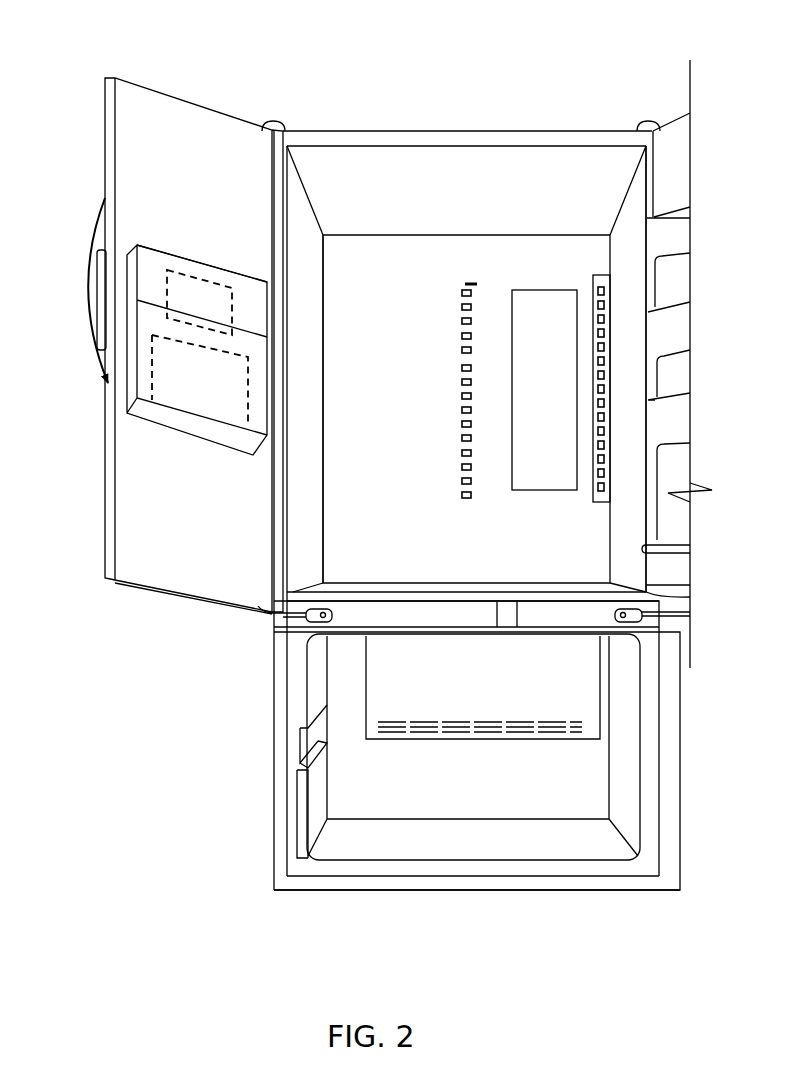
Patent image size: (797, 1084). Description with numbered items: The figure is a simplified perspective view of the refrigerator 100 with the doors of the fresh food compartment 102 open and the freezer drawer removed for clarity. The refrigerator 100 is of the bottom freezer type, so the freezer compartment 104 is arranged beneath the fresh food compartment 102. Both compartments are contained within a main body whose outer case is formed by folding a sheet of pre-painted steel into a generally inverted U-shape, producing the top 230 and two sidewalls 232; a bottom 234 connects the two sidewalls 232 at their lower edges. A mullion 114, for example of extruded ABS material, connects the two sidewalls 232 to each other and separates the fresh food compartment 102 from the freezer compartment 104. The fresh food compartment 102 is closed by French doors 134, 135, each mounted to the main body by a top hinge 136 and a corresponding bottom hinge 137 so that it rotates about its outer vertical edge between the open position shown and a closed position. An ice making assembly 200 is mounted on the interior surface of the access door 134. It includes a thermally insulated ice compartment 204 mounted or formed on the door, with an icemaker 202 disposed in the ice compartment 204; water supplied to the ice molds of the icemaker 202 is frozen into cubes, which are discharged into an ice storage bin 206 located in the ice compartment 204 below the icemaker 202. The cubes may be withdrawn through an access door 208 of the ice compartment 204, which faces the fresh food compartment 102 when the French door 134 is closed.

The refrigerator 100 is at (533, 82).
The fresh food compartment 102 is at (598, 252).
The freezer compartment 104 is at (558, 788).
The mullion 114 is at (565, 612).
The French door 134 is at (140, 95).
The French door 135 is at (668, 290).
The top hinge 136 is at (280, 122).
The bottom hinge 137 is at (268, 610).
The ice making assembly 200 is at (176, 352).
The icemaker 202 is at (210, 283).
The ice compartment 204 is at (106, 383).
The ice storage bin 206 is at (200, 405).
The access door 208 is at (243, 277).
The top 230 is at (428, 130).
The sidewalls 232 is at (318, 388).
The bottom 234 is at (535, 893).